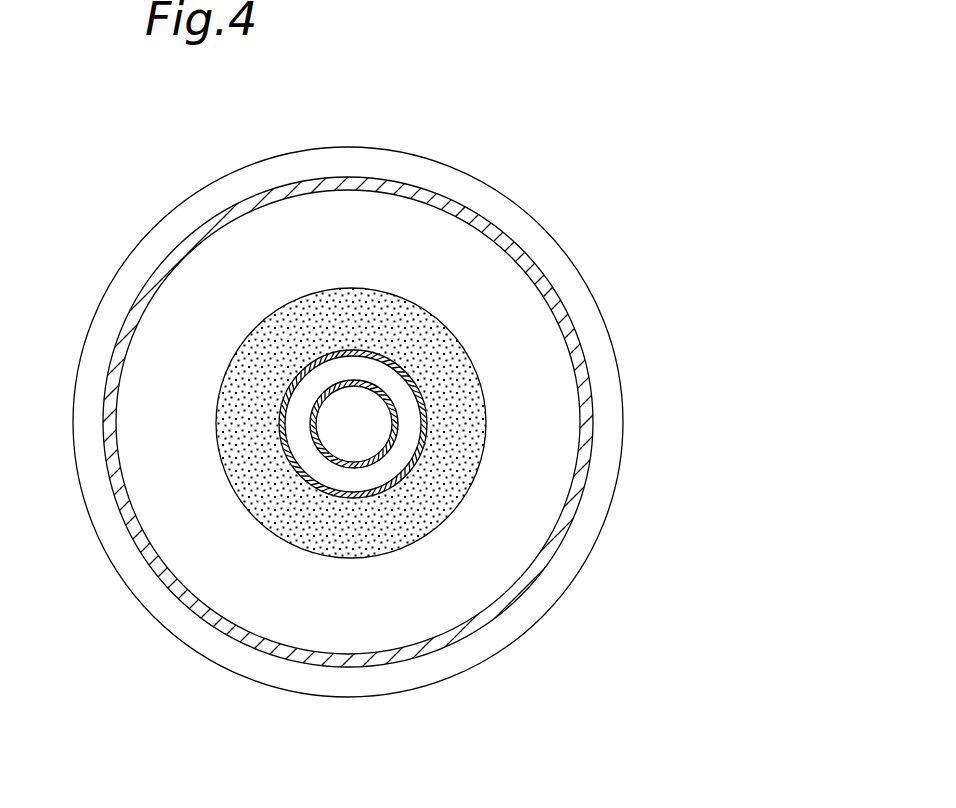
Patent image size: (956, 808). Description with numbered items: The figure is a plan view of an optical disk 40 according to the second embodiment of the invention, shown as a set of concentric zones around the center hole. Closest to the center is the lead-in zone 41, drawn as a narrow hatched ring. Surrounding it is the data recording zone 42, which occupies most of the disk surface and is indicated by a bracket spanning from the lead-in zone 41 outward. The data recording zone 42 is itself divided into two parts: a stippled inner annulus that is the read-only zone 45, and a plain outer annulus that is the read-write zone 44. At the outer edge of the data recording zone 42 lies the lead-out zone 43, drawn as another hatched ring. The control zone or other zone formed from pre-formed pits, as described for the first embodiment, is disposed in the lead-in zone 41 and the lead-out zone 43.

The optical disk 40 is at (142, 240).
The lead-in zone 41 is at (353, 497).
The data recording zone 42 is at (361, 350).
The lead-out zone 43 is at (537, 572).
The read-write zone 44 is at (527, 336).
The read-only zone 45 is at (425, 330).